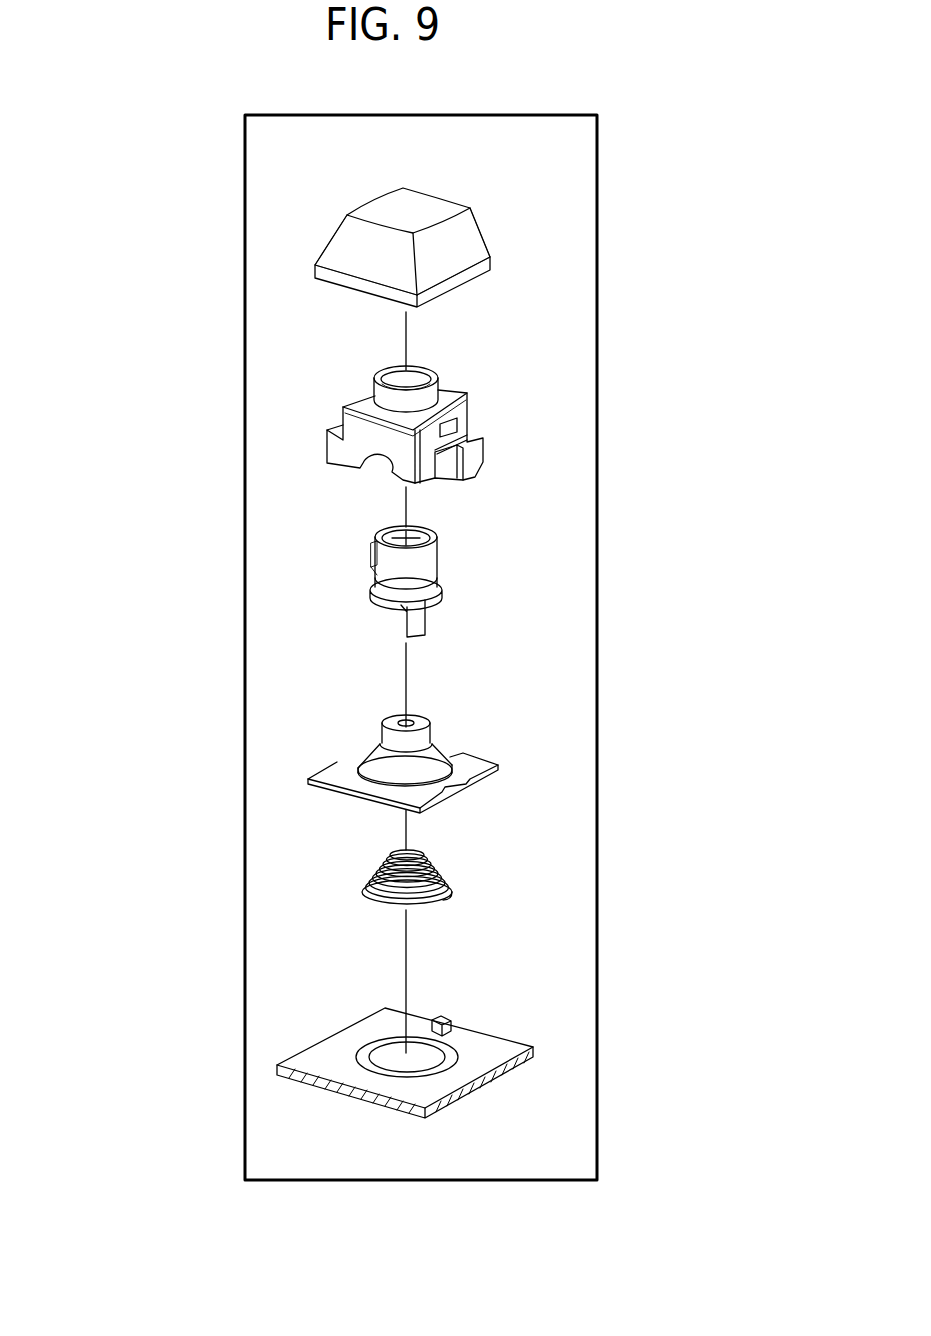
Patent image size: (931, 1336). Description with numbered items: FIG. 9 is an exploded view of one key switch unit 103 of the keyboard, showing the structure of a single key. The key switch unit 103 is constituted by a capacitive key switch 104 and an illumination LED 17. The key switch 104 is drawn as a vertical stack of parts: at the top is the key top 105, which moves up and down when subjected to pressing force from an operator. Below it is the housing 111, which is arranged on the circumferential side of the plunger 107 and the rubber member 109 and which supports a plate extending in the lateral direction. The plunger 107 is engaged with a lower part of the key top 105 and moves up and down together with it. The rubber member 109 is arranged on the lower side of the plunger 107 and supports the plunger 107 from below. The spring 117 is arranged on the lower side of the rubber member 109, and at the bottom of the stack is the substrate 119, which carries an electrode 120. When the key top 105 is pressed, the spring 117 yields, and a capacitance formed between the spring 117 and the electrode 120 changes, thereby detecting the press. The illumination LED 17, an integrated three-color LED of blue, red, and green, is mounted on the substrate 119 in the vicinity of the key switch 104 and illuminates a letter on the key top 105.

The key switch unit 103 is at (290, 1180).
The key switch 104 is at (490, 235).
The key top 105 is at (340, 247).
The housing 111 is at (482, 410).
The plunger 107 is at (397, 590).
The rubber member 109 is at (442, 753).
The spring 117 is at (370, 877).
The substrate 119 is at (473, 1065).
The electrode 120 is at (383, 1053).
The illumination LED 17 is at (440, 1017).